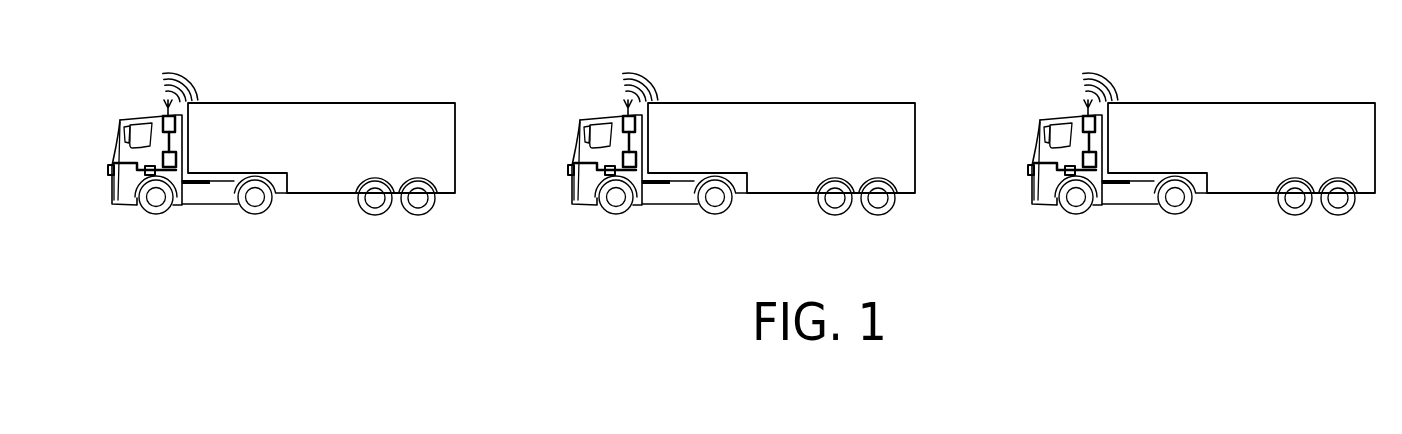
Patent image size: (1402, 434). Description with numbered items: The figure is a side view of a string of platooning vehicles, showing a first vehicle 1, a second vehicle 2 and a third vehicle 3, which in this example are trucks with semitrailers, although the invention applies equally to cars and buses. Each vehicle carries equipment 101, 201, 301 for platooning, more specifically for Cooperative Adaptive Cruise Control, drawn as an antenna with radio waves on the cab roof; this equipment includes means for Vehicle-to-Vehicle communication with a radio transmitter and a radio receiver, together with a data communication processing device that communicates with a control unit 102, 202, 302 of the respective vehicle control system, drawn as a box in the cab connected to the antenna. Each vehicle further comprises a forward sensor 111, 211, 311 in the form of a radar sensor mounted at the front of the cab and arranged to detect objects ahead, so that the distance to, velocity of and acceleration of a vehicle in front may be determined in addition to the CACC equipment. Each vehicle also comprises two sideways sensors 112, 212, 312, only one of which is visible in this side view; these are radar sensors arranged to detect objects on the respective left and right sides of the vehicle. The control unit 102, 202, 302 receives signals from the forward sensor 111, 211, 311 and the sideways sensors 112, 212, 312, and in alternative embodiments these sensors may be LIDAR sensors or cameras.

The first vehicle 1 is at (318, 102).
The second vehicle 2 is at (706, 150).
The third vehicle 3 is at (1166, 150).
The equipment for platooning 101 is at (165, 108).
The control unit 102 is at (176, 160).
The forward sensor 111 is at (108, 168).
The sideways sensor 112 is at (145, 172).
The equipment for platooning 201 is at (578, 112).
The control unit 202 is at (647, 205).
The forward sensor 211 is at (538, 139).
The sideways sensor 212 is at (559, 192).
The equipment for platooning 301 is at (1037, 112).
The control device of third vehicle 302 is at (1103, 205).
The forward sensor 311 is at (1000, 139).
The sideways sensor 312 is at (1018, 192).